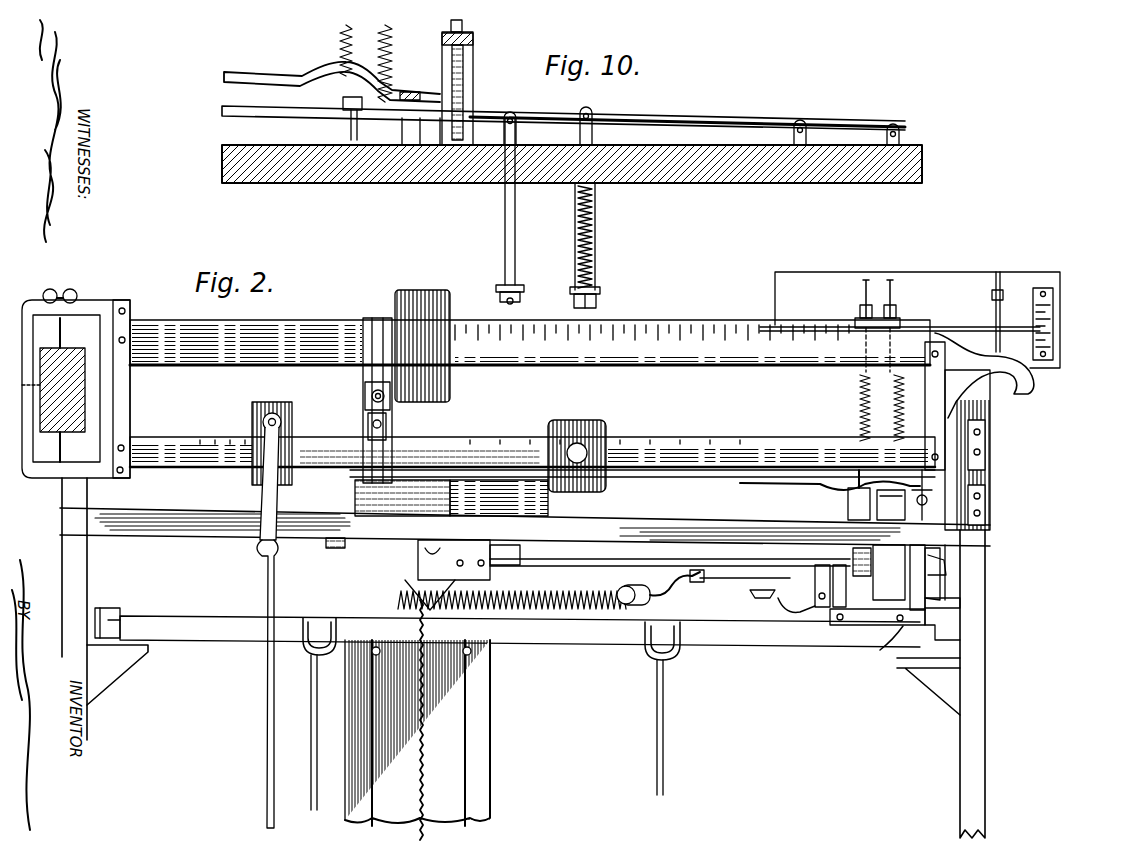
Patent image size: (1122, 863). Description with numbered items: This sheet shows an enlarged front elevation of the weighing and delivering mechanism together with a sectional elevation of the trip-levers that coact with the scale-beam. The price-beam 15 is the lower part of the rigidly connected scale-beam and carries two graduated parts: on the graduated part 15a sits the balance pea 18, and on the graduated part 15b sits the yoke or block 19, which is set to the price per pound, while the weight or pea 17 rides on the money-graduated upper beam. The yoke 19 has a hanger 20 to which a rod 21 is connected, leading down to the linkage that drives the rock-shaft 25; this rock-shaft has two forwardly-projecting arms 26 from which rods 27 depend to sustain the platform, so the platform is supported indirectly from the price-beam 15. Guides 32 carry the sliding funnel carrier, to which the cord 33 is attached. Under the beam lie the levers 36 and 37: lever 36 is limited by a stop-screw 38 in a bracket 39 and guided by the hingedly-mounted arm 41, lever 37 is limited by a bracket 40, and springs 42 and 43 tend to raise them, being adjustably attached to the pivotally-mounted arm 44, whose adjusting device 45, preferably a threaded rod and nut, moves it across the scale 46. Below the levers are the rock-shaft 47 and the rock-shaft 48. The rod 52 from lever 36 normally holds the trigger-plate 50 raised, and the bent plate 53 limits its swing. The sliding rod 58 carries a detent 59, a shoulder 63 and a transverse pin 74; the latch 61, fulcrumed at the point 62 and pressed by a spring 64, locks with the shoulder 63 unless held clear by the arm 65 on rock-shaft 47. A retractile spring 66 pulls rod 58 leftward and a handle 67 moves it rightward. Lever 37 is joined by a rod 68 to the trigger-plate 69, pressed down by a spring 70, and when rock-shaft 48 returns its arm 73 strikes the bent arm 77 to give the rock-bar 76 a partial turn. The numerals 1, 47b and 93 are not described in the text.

In FIG. 2, the clamp 1 is at (76, 383).
In FIG. 2, the price-beam 15 is at (818, 448).
In FIG. 2, the graduated part 15a is at (632, 440).
In FIG. 2, the graduated part 15b is at (232, 435).
In FIG. 2, the weight or pea 17 is at (440, 290).
In FIG. 2, the balance pea 18 is at (578, 416).
In FIG. 2, the yoke or block 19 is at (276, 406).
In FIG. 2, the hanger 20 is at (282, 508).
In FIG. 2, the rod 21 is at (266, 702).
In FIG. 2, the rock-shaft 25 is at (214, 620).
In FIG. 2, the forwardly-projecting arms 26 is at (320, 617).
In FIG. 2, the rods 27 is at (311, 742).
In FIG. 2, the guides 32 is at (365, 826).
In FIG. 2, the cord or flexible connection 33 is at (405, 724).
In FIG. 10, the lever 36 is at (224, 113).
In FIG. 2, the lever 36 is at (930, 498).
In FIG. 10, the lever 37 is at (262, 76).
In FIG. 2, the lever 37 is at (822, 488).
In FIG. 10, the stop-screw 38 is at (470, 30).
In FIG. 10, the bracket 39 is at (474, 66).
In FIG. 2, the bracket 39 is at (891, 505).
In FIG. 2, the bracket 40 is at (848, 504).
In FIG. 10, the hingedly-mounted arm 41 is at (350, 128).
In FIG. 10, the spring 42 is at (394, 42).
In FIG. 2, the spring 42 is at (900, 396).
In FIG. 10, the spring 43 is at (338, 48).
In FIG. 2, the spring 43 is at (858, 402).
In FIG. 2, the pivotally-mounted arm 44 is at (934, 328).
In FIG. 2, the adjusting device 45 is at (1002, 302).
In FIG. 2, the scale 46 is at (1055, 310).
In FIG. 2, the rock-shaft 47 is at (722, 478).
In FIG. 2, the rod 47b is at (900, 625).
In FIG. 2, the rock-shaft 48 is at (842, 622).
In FIG. 10, the trigger-plate 50 is at (518, 286).
In FIG. 2, the trigger-plate 50 is at (889, 577).
In FIG. 10, the rod 52 is at (504, 216).
In FIG. 2, the bent plate 53 is at (998, 538).
In FIG. 2, the rod 58 is at (744, 580).
In FIG. 2, the detent 59 is at (900, 628).
In FIG. 2, the latch 61 is at (768, 596).
In FIG. 2, the fulcrum point 62 is at (820, 606).
In FIG. 2, the shoulder 63 is at (683, 588).
In FIG. 2, the spring 64 is at (948, 572).
In FIG. 2, the arm 65 is at (945, 620).
In FIG. 2, the retractile spring 66 is at (550, 610).
In FIG. 2, the handle 67 is at (640, 606).
In FIG. 10, the rod 68 is at (596, 226).
In FIG. 10, the trigger-plate 69 is at (600, 290).
In FIG. 10, the spring 70 is at (576, 212).
In FIG. 2, the spring 70 is at (985, 585).
In FIG. 2, the arm 73 is at (838, 612).
In FIG. 2, the transverse pin or projection 74 is at (527, 325).
In FIG. 2, the rock bar or shaft 76 is at (364, 396).
In FIG. 2, the bent arm 77 is at (790, 608).
In FIG. 2, the block 93 is at (462, 575).